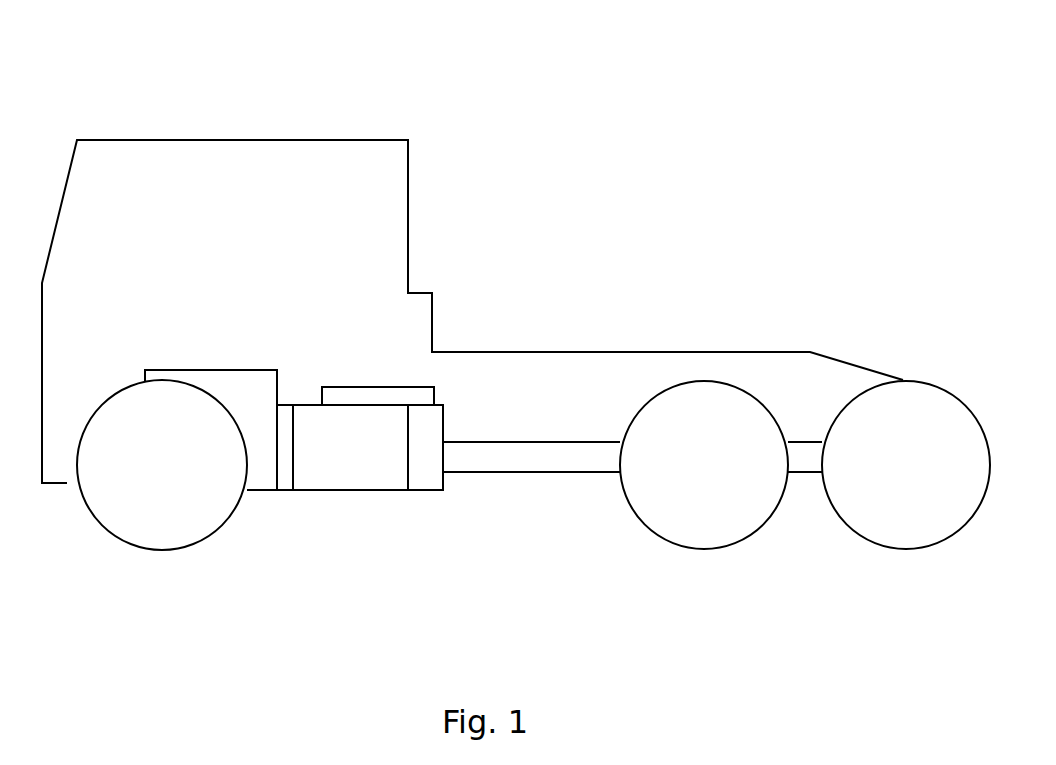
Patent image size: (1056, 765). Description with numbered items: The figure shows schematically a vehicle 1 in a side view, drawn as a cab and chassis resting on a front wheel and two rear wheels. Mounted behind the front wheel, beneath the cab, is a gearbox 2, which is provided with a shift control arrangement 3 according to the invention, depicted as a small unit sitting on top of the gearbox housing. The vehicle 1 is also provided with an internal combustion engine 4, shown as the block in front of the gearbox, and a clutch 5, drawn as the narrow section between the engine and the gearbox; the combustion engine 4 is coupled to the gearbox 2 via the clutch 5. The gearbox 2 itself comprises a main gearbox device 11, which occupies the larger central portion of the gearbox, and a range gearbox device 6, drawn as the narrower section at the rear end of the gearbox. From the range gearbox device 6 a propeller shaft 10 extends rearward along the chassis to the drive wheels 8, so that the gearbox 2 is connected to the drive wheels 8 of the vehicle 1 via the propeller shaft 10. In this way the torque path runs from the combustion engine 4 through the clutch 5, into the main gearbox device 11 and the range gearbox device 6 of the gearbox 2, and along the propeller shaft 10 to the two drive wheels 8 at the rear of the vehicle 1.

The vehicle 1 is at (522, 115).
The gearbox 2 is at (340, 520).
The shift control arrangement 3 is at (396, 387).
The internal combustion engine 4 is at (185, 370).
The clutch 5 is at (287, 405).
The range gearbox device 6 is at (445, 425).
The drive wheels 8 is at (752, 535).
The propeller shaft 10 is at (533, 473).
The main gearbox device 11 is at (383, 490).